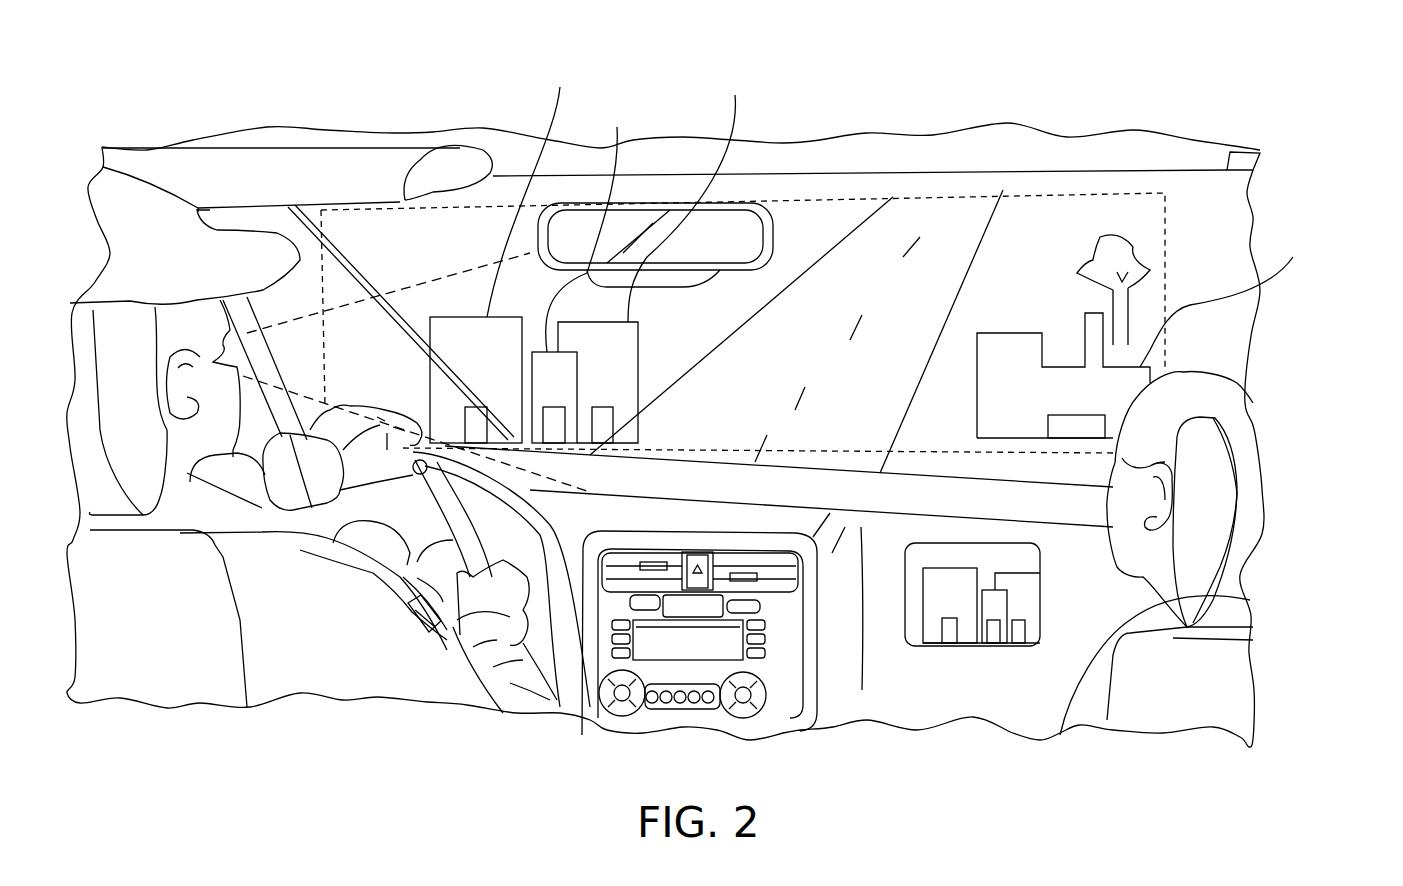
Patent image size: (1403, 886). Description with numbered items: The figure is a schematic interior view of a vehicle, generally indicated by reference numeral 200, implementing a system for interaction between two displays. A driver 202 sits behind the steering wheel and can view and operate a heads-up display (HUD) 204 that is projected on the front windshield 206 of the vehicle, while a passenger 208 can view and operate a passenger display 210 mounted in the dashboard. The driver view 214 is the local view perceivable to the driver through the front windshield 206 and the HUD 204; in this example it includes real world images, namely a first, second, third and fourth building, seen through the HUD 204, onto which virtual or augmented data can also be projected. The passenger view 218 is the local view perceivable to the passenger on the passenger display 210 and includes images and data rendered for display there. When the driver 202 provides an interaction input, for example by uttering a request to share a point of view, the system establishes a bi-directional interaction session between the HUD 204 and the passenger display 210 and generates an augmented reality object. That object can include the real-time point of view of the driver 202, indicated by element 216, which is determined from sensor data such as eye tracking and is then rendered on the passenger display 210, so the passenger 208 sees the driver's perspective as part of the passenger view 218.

The interior view of the vehicle 200 is at (1110, 82).
The driver 202 is at (137, 203).
The heads-up display (HUD) 204 is at (1165, 216).
The front windshield 206 is at (1237, 157).
The passenger 208 is at (1208, 383).
The passenger display 210 is at (1040, 595).
The driver view 214 is at (325, 185).
The real-time point of view of the driver 216 is at (415, 290).
The passenger view 218 is at (1045, 578).